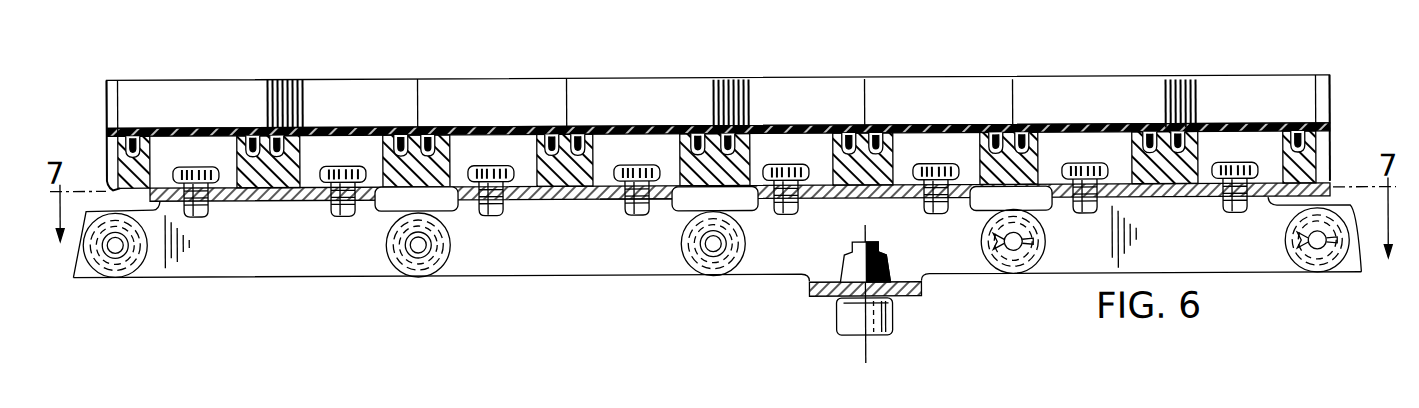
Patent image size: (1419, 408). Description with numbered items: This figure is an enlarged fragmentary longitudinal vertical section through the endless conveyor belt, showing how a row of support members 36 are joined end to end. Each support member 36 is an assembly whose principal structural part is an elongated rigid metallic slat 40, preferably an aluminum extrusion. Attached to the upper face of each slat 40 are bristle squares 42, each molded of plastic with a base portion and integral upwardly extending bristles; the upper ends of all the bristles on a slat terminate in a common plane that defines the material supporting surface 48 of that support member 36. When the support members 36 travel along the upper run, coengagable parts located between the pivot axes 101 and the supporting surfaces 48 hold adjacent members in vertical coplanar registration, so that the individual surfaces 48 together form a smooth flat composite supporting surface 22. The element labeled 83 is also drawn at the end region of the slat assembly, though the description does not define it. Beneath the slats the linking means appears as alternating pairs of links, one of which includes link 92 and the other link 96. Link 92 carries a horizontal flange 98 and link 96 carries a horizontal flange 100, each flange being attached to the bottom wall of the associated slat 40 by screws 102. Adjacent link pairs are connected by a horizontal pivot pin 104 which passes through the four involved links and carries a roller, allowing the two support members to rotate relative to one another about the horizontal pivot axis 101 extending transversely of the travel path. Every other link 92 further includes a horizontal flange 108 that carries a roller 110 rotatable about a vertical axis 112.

The composite supporting surface 22 is at (1093, 80).
The support member 36 is at (353, 90).
The slat 40 is at (292, 191).
The bristle square 42 is at (849, 91).
The material supporting surface 48 is at (521, 80).
The end wall 83 is at (1004, 93).
The link 92 is at (283, 263).
The link 96 is at (597, 259).
The horizontal flange 98 is at (241, 204).
The horizontal flange 100 is at (618, 204).
The horizontal pivot axis 101 is at (420, 250).
The screw 102 is at (203, 215).
The horizontal pivot pin 104 is at (444, 242).
The horizontal flange 108 is at (909, 300).
The roller 110 is at (837, 319).
The vertical axis 112 is at (868, 352).